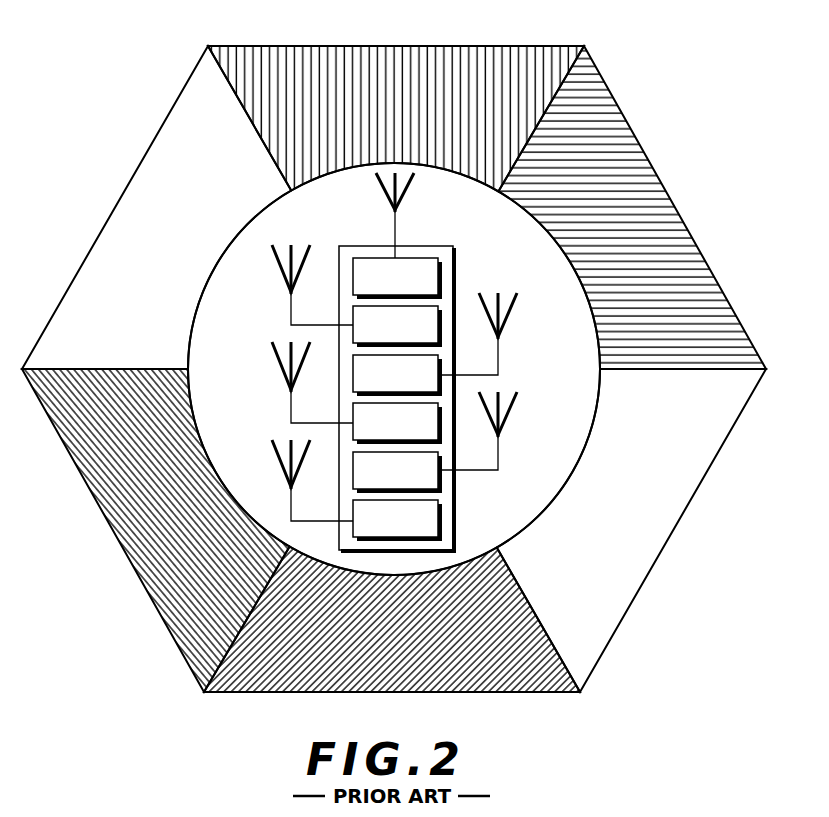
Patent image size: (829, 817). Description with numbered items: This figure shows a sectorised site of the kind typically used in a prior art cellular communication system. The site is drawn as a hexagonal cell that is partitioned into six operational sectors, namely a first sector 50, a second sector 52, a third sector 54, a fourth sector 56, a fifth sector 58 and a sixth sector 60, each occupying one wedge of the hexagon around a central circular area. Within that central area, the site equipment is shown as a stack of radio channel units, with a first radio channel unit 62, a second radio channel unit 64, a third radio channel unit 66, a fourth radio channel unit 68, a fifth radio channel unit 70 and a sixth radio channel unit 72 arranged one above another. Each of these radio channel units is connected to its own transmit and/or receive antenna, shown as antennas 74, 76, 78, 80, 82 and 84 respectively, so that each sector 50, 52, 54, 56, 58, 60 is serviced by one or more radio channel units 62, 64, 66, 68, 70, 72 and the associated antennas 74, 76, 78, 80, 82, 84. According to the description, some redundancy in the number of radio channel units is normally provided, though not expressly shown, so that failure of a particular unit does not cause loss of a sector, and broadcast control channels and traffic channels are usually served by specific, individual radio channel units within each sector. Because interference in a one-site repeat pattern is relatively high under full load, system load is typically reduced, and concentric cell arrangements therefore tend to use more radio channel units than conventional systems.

The operational sector 50 is at (433, 46).
The operational sector 52 is at (637, 130).
The operational sector 54 is at (655, 565).
The operational sector 56 is at (520, 693).
The operational sector 58 is at (75, 468).
The operational sector 60 is at (130, 182).
The radio channel unit 62 is at (421, 260).
The radio channel unit 64 is at (441, 311).
The radio channel unit 66 is at (349, 367).
The radio channel unit 68 is at (441, 408).
The radio channel unit 70 is at (350, 458).
The radio channel unit 72 is at (442, 518).
The transmit and/or receive antenna 74 is at (397, 232).
The transmit and/or receive antenna 76 is at (289, 300).
The transmit and/or receive antenna 78 is at (500, 358).
The transmit and/or receive antenna 80 is at (291, 395).
The transmit and/or receive antenna 82 is at (500, 452).
The transmit and/or receive antenna 84 is at (287, 496).